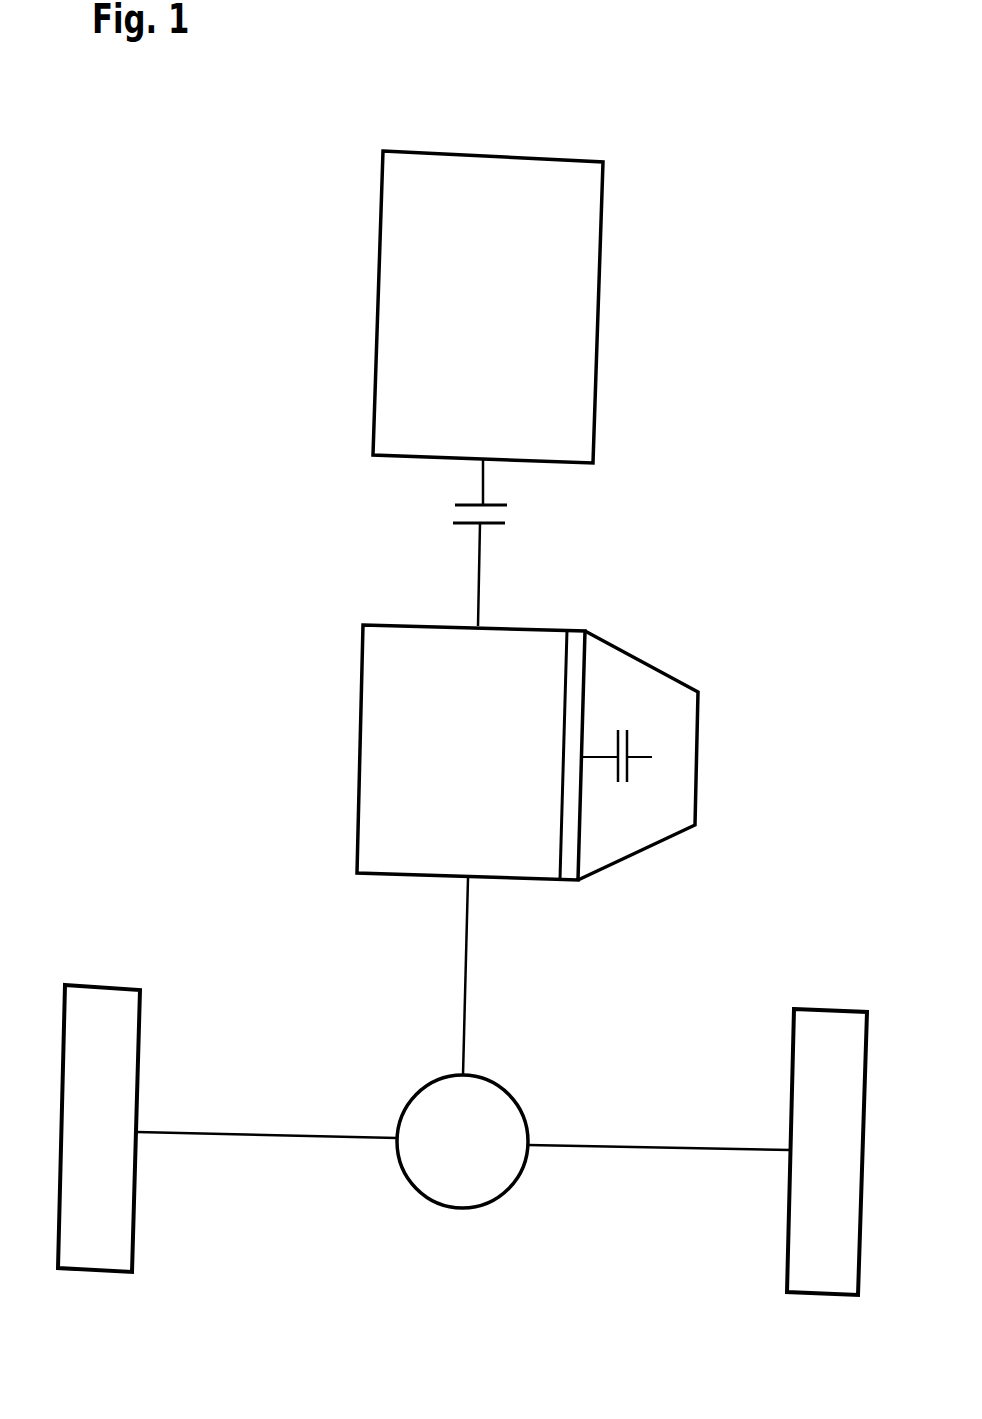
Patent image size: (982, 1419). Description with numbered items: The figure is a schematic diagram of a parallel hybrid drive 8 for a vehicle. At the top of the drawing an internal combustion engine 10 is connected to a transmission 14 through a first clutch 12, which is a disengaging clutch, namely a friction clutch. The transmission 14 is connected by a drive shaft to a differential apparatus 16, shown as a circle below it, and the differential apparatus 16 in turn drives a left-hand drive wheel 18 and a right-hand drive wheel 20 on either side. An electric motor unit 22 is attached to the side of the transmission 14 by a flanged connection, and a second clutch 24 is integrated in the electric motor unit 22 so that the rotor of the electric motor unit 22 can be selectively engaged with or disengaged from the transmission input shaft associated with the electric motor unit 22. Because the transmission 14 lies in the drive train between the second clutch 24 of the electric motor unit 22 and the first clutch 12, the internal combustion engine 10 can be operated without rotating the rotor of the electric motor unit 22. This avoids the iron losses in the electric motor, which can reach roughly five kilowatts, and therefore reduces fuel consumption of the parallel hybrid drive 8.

The parallel hybrid drive 8 is at (322, 300).
The internal combustion engine 10 is at (582, 330).
The first clutch 12 is at (503, 527).
The transmission 14 is at (412, 742).
The differential apparatus 16 is at (440, 1172).
The left-hand drive wheel 18 is at (117, 1230).
The right-hand drive wheel 20 is at (813, 1255).
The electric motor unit 22 is at (662, 698).
The second clutch 24 is at (630, 778).